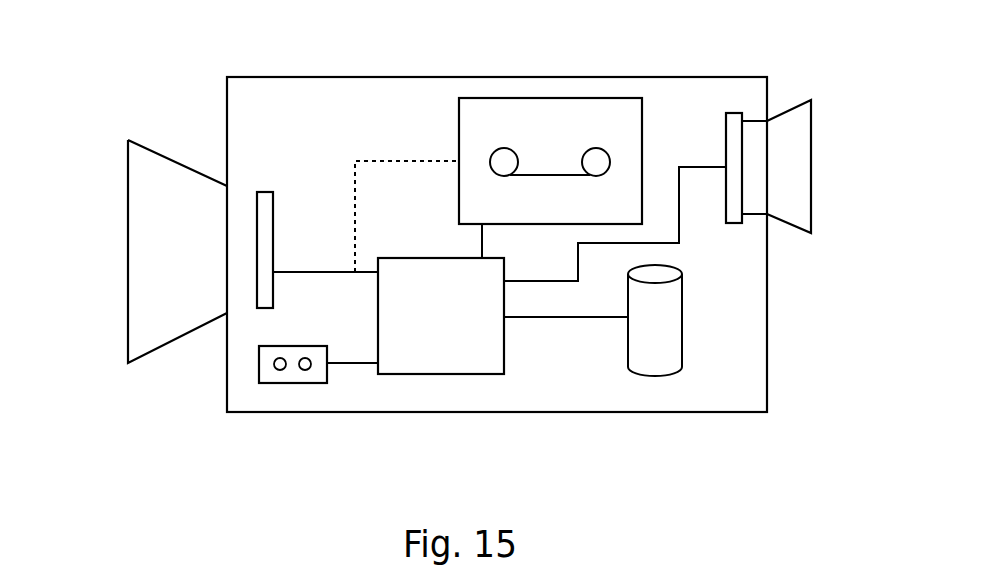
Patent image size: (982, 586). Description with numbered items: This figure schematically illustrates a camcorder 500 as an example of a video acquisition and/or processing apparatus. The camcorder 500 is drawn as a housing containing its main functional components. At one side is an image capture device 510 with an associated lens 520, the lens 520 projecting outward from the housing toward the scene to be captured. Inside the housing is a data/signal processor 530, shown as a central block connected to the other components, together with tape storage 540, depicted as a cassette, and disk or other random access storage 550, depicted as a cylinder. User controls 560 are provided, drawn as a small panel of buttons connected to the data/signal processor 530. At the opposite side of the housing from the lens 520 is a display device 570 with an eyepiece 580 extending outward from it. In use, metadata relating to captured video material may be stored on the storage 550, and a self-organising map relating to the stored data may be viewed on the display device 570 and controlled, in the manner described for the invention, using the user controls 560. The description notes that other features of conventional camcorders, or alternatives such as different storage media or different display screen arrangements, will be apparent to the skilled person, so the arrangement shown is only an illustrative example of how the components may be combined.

The camcorder 500 is at (707, 77).
The image capture device 510 is at (273, 215).
The lens 520 is at (128, 178).
The data/signal processor 530 is at (504, 356).
The tape storage 540 is at (548, 98).
The disk or other random access storage 550 is at (682, 318).
The user controls 560 is at (259, 362).
The display device 570 is at (735, 223).
The eyepiece 580 is at (812, 167).